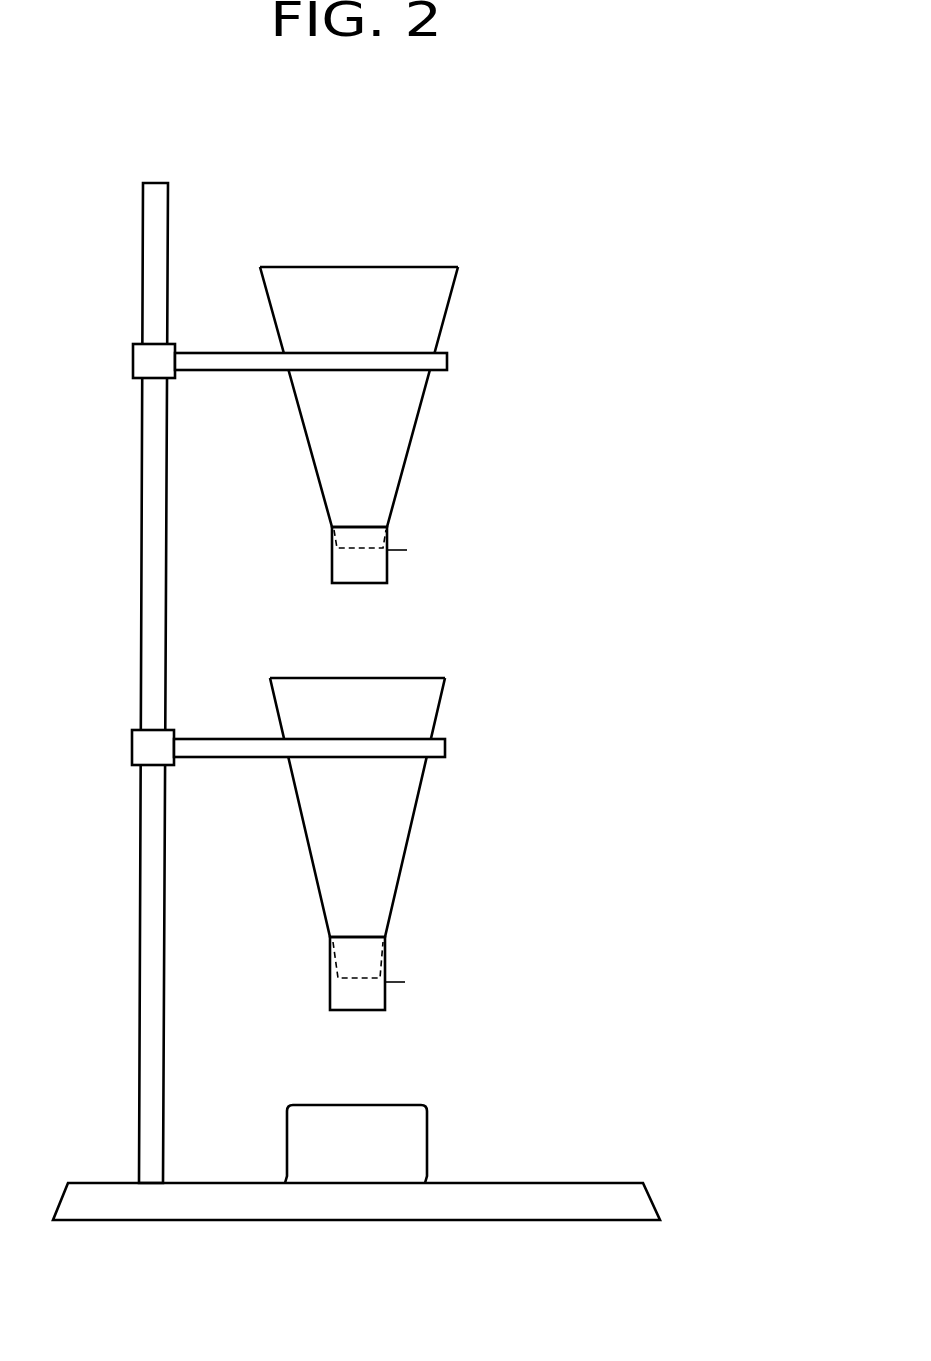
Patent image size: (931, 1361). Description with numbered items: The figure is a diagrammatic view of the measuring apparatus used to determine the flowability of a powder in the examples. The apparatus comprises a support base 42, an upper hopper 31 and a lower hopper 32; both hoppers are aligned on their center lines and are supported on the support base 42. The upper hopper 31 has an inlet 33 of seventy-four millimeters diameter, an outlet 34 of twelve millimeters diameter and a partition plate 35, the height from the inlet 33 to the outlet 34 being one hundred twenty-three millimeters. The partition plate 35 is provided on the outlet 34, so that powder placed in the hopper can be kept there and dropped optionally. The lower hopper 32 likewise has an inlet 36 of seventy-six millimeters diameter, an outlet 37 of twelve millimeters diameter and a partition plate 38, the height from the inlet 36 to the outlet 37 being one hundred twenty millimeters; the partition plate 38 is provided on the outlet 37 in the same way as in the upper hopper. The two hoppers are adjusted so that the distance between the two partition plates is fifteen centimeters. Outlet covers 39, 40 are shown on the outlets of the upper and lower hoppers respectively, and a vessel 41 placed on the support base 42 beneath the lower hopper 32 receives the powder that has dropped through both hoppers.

The upper hopper 31 is at (386, 379).
The lower hopper 32 is at (383, 825).
The inlet 33 is at (408, 267).
The outlet 34 is at (367, 545).
The partition plate 35 is at (400, 553).
The inlet 36 is at (397, 678).
The outlet 37 is at (367, 973).
The partition plate 38 is at (395, 985).
The outlet cover 39 is at (342, 567).
The outlet cover 40 is at (340, 993).
The vessel 41 is at (407, 1133).
The support base 42 is at (190, 1182).